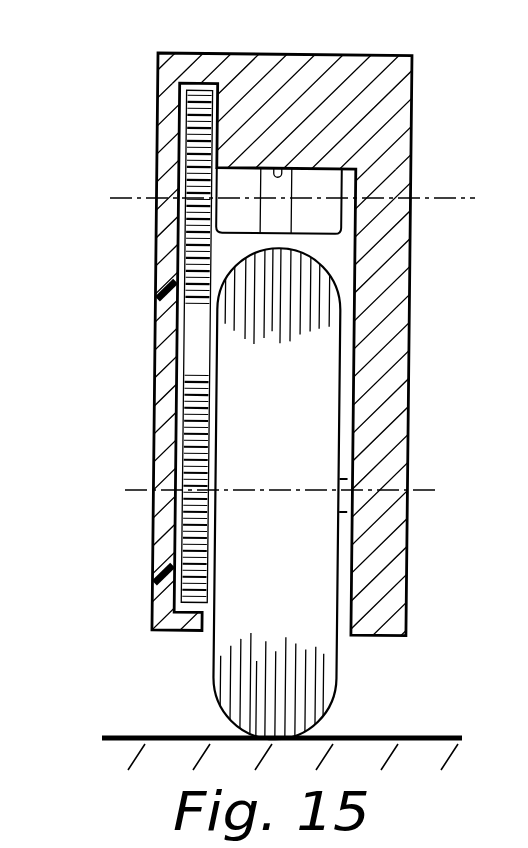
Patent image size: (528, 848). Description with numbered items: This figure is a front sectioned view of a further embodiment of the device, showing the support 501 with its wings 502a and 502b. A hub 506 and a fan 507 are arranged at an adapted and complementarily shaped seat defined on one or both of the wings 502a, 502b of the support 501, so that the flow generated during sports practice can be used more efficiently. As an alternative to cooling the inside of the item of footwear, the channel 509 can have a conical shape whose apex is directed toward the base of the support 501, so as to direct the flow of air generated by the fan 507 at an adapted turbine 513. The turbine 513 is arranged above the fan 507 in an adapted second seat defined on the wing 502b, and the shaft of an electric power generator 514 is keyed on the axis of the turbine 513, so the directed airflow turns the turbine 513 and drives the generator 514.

The support 501 is at (362, 54).
The wing 502a is at (388, 443).
The wing 502b is at (157, 468).
The hub 506 is at (217, 597).
The fan 507 is at (157, 576).
The channel 509 is at (200, 347).
The turbine 513 is at (157, 290).
The electric power generator 514 is at (325, 212).